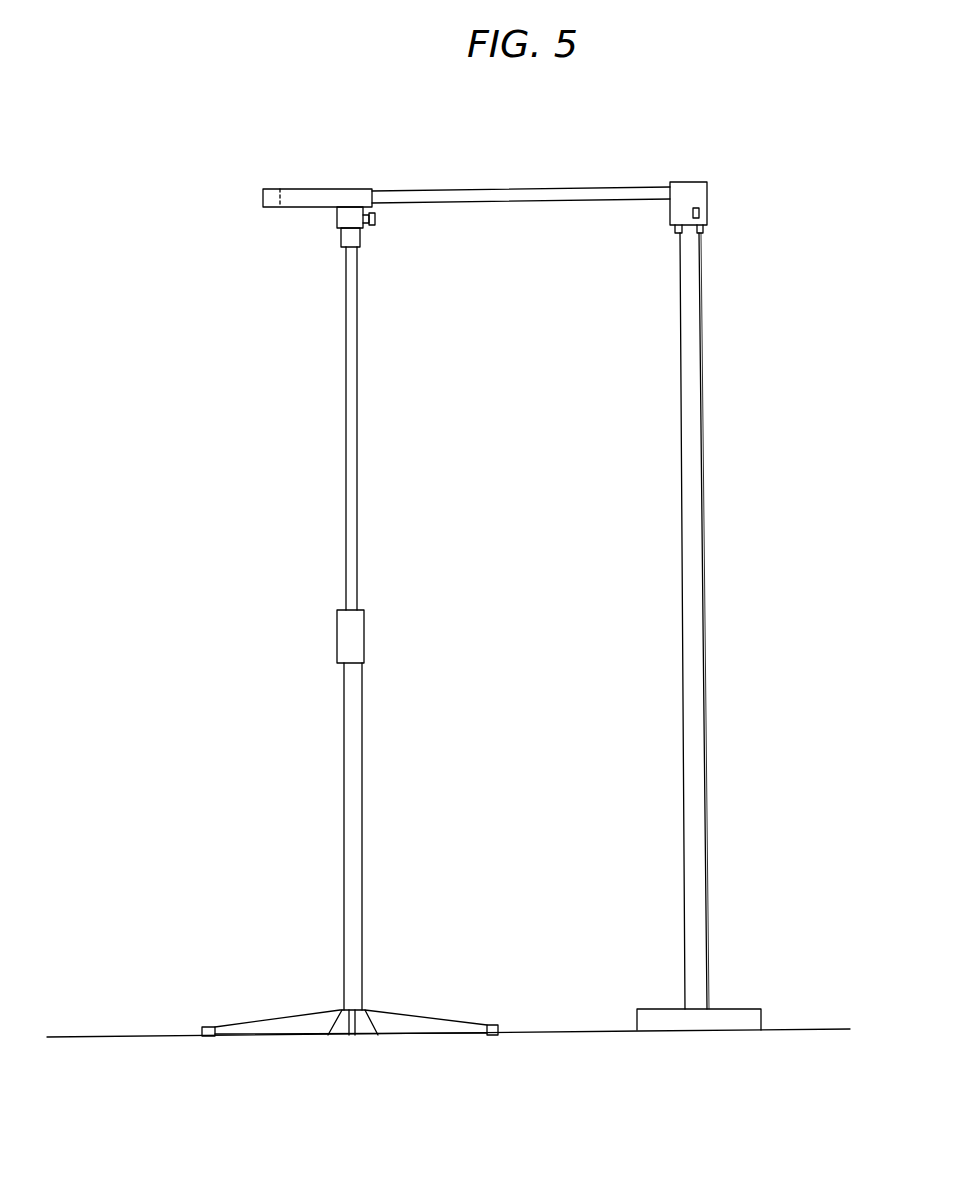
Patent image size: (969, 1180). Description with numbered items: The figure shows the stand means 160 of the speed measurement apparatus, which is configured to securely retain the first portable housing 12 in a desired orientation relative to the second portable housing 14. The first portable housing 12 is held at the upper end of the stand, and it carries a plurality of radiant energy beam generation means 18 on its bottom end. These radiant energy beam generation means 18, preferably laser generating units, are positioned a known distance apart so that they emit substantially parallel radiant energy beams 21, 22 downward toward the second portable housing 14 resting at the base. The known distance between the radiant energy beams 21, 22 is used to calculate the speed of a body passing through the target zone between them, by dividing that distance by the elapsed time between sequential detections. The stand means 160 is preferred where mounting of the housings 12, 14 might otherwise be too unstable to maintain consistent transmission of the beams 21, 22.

The stand means 160 is at (320, 183).
The first portable housing 12 is at (718, 182).
The radiant energy beam generation means 18 is at (708, 233).
The radiant energy beam 22 is at (680, 378).
The radiant energy beam 21 is at (703, 437).
The second portable housing 14 is at (762, 1008).